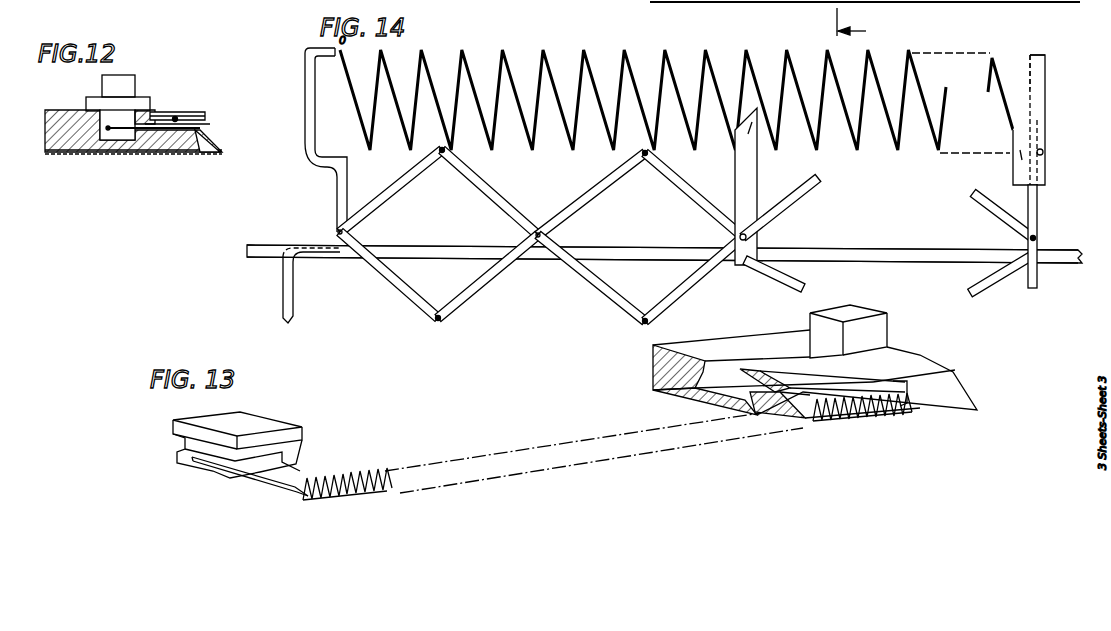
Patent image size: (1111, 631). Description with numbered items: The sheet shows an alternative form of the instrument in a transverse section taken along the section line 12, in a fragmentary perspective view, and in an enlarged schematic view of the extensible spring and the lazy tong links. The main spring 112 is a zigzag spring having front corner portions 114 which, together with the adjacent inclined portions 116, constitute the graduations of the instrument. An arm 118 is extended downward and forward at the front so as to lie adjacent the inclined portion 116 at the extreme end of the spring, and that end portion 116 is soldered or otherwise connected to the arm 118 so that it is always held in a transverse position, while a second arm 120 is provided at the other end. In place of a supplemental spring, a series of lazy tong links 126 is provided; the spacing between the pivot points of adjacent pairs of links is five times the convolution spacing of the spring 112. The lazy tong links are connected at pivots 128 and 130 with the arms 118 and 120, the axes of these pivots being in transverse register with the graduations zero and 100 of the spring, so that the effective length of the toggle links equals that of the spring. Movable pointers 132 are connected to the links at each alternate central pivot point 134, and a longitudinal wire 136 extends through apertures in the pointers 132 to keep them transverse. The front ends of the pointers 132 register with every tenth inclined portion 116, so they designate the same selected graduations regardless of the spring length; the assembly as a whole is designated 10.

In FIG. 14, the connector assembly 10 is at (1030, 122).
In FIG. 14, the section line 12 is at (866, 27).
In FIG. 14, the graduation "100" 100 is at (1035, 47).
In FIG. 14, the main spring 112 is at (505, 56).
In FIG. 13, the main spring 112 is at (345, 476).
In FIG. 14, the front corner portions 114 is at (462, 52).
In FIG. 13, the front corner portions 114 is at (316, 498).
In FIG. 14, the inclined portions 116 is at (590, 65).
In FIG. 13, the inclined portions 116 is at (338, 498).
In FIG. 12, the arm 118 is at (212, 138).
In FIG. 14, the arm 118 is at (1046, 88).
In FIG. 13, the arm 118 is at (290, 490).
In FIG. 14, the arm 120 is at (305, 88).
In FIG. 13, the arm 120 is at (918, 389).
In FIG. 12, the lazy tong links 126 is at (160, 112).
In FIG. 14, the lazy tong links 126 is at (462, 300).
In FIG. 14, the pivot connection 128 is at (1036, 238).
In FIG. 14, the pivot connection 130 is at (338, 232).
In FIG. 12, the movable pointers 132 is at (206, 122).
In FIG. 14, the movable pointers 132 is at (748, 168).
In FIG. 14, the central pivot point 134 is at (752, 237).
In FIG. 12, the longitudinal wire 136 is at (180, 114).
In FIG. 14, the longitudinal wire 136 is at (628, 258).